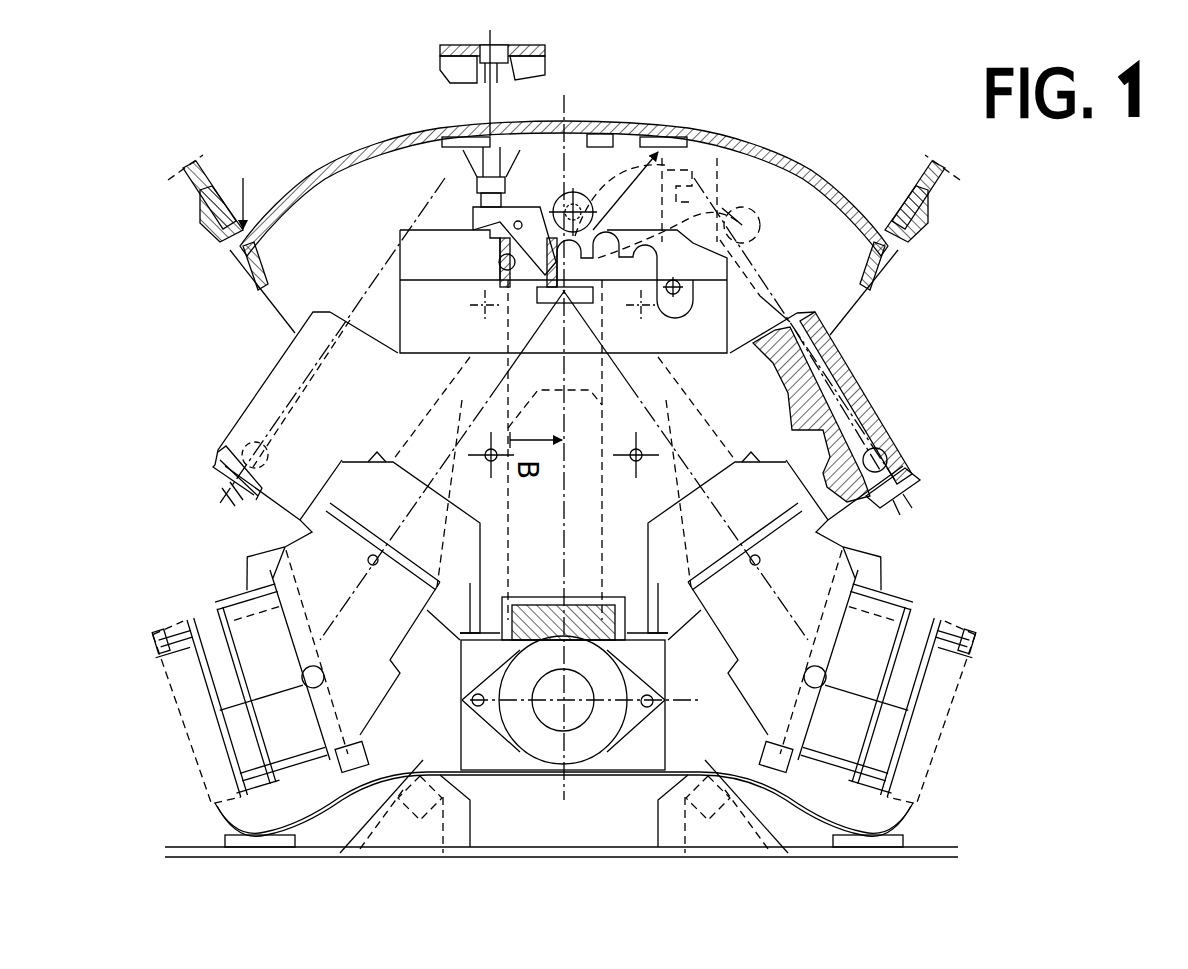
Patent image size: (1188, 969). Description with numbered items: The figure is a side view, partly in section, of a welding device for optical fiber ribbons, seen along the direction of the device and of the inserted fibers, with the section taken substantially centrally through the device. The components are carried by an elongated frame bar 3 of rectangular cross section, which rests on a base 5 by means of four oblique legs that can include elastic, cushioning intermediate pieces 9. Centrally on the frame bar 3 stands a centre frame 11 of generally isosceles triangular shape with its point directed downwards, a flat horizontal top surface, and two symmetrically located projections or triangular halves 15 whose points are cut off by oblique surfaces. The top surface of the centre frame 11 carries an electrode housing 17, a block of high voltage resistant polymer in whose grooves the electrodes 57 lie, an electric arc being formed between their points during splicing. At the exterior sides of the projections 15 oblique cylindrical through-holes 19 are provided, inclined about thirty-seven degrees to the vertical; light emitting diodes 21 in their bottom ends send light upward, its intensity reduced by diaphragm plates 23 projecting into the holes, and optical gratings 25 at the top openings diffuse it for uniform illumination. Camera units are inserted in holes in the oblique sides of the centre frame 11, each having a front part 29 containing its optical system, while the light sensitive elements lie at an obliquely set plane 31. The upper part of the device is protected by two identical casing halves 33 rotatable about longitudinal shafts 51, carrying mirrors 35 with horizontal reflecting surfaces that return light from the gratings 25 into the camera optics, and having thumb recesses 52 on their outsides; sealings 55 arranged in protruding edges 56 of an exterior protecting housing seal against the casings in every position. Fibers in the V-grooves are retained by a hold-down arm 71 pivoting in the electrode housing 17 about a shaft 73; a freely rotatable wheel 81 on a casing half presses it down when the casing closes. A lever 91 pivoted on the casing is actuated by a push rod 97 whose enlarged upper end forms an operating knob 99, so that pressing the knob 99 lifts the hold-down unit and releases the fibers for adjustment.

The frame bar 3 is at (657, 720).
The base 5 is at (930, 853).
The elastic cushioning intermediate piece 9 is at (680, 743).
The centre frame 11 is at (677, 618).
The projections 15 is at (263, 405).
The electrode housing 17 is at (410, 326).
The oblique cylindrical through-holes 19 is at (850, 378).
The light emitting diodes 21 is at (882, 456).
The diaphragm plates 23 is at (823, 322).
The optical gratings 25 is at (798, 322).
The front part 29 is at (653, 701).
The plane 31 is at (835, 640).
The casing halves 33 is at (317, 172).
The mirrors 35 is at (655, 137).
The shafts 51 is at (642, 459).
The recesses 52 is at (620, 126).
The sealings 55 is at (245, 190).
The protruding edges 56 is at (198, 198).
The electrodes 57 is at (565, 291).
The hold-down arm 71 is at (665, 243).
The shaft 73 is at (680, 294).
The freely rotatable wheel 81 is at (584, 196).
The levers 91 is at (512, 255).
The push rod 97 is at (503, 165).
The operating knob 99 is at (482, 42).